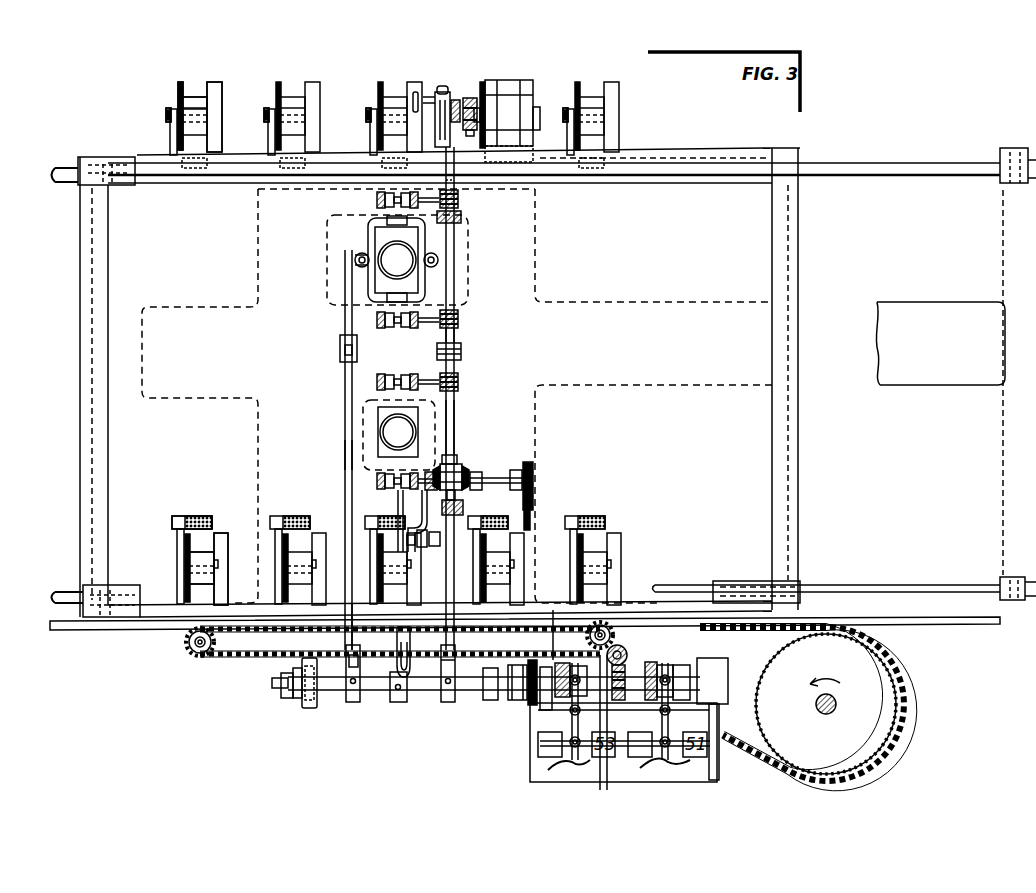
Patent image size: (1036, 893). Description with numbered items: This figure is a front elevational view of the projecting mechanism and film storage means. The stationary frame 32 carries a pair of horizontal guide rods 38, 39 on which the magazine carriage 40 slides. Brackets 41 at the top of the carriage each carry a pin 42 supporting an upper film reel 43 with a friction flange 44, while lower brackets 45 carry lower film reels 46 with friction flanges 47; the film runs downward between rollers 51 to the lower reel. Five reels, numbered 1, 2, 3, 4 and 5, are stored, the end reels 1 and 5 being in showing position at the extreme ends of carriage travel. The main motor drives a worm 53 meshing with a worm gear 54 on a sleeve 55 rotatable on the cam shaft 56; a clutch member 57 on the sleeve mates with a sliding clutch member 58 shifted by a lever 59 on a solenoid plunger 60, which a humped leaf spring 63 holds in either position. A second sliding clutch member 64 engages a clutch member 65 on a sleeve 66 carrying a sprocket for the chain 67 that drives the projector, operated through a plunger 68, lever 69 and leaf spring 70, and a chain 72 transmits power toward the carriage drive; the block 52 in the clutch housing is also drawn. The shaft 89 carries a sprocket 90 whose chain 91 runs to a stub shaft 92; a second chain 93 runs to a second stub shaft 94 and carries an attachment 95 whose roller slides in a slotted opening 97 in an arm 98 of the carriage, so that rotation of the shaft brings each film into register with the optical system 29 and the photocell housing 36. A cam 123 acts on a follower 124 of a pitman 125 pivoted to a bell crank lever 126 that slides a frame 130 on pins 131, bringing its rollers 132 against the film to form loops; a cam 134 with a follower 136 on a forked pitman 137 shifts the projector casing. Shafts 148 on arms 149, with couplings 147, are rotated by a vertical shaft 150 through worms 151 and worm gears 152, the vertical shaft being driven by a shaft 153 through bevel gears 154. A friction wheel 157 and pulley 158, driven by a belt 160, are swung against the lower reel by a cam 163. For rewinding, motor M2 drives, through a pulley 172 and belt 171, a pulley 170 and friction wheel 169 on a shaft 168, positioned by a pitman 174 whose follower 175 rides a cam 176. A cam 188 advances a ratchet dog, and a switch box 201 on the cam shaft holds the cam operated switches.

The film reel number one 1 is at (193, 115).
The film reel number two 2 is at (292, 115).
The film reel number three 3 is at (394, 115).
The film reel number four 4 is at (480, 105).
The film reel number five 5 is at (591, 115).
The rewinding motor M2 is at (520, 84).
The optical system 29 is at (397, 260).
The frame 32 is at (949, 386).
The photocell housing 36 is at (398, 432).
The horizontal guide rod 38 is at (877, 160).
The horizontal guide rod 39 is at (902, 583).
The magazine frame or carriage 40 is at (800, 252).
The upper bracket 41 is at (170, 134).
The pin 42 is at (180, 95).
The upper film reel 43 is at (195, 103).
The friction flange 44 is at (220, 84).
The lower bracket 45 is at (178, 552).
The lower film reel 46 is at (200, 553).
The friction flange 47 is at (226, 552).
The rollers 51 is at (198, 516).
The cam block 52 is at (640, 744).
The worm 53 is at (628, 660).
The worm gear 54 is at (621, 742).
The sleeve 55 is at (583, 660).
The cam shaft 56 is at (515, 701).
The clutch member 57 is at (652, 668).
The sliding clutch member 58 is at (680, 666).
The lever 59 is at (680, 764).
The solenoid plunger 60 is at (665, 765).
The humped leaf spring 63 is at (670, 765).
The sliding clutch member 64 is at (556, 615).
The clutch member 65 is at (546, 712).
The sleeve 66 is at (531, 706).
The sprocket chain 67 is at (535, 500).
The plunger 68 is at (583, 765).
The lever 69 is at (550, 770).
The leaf spring 70 is at (570, 762).
The chain 72 is at (603, 790).
The shaft 89 is at (836, 708).
The sprocket 90 is at (754, 738).
The chain 91 is at (770, 742).
The stub shaft 92 is at (606, 630).
The second chain 93 is at (222, 658).
The second stub shaft 94 is at (190, 652).
The attachment 95 is at (392, 636).
The slotted opening 97 is at (397, 642).
The arm 98 is at (410, 642).
The cam 123 is at (353, 702).
The follower 124 is at (360, 665).
The pitman 125 is at (345, 463).
The bell crank lever 126 is at (345, 326).
The frame 130 is at (368, 235).
The pins 131 is at (355, 255).
The rollers 132 is at (395, 218).
The cam 134 is at (310, 712).
The follower 136 is at (306, 708).
The forked pitman 137 is at (293, 695).
The coupling 147 is at (398, 193).
The shaft 148 is at (459, 212).
The arm 149 is at (382, 330).
The vertical shaft 150 is at (455, 430).
The worm 151 is at (460, 332).
The worm gear 152 is at (459, 200).
The shaft 153 is at (496, 477).
The bevel gears 154 is at (462, 468).
The friction wheel 157 is at (426, 552).
The pulley 158 is at (441, 540).
The belt 160 is at (448, 515).
The cam 163 is at (400, 703).
The shaft 168 is at (430, 98).
The friction wheel 169 is at (415, 92).
The pulley 170 is at (462, 100).
The belt 171 is at (456, 99).
The pulley 172 is at (466, 128).
The pitman 174 is at (455, 155).
The follower 175 is at (448, 704).
The cam 176 is at (455, 704).
The cam 188 is at (490, 702).
The switch box 201 is at (717, 668).